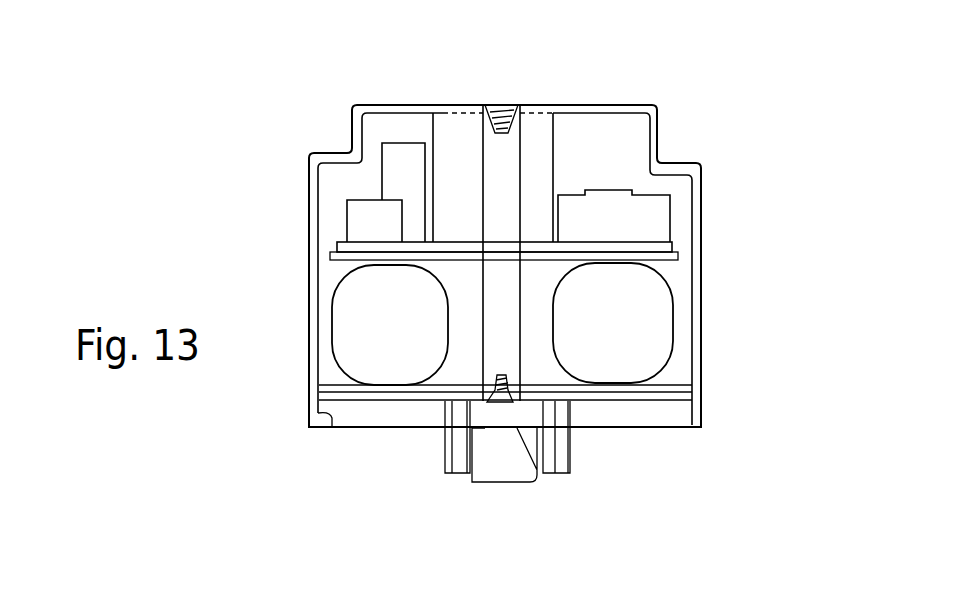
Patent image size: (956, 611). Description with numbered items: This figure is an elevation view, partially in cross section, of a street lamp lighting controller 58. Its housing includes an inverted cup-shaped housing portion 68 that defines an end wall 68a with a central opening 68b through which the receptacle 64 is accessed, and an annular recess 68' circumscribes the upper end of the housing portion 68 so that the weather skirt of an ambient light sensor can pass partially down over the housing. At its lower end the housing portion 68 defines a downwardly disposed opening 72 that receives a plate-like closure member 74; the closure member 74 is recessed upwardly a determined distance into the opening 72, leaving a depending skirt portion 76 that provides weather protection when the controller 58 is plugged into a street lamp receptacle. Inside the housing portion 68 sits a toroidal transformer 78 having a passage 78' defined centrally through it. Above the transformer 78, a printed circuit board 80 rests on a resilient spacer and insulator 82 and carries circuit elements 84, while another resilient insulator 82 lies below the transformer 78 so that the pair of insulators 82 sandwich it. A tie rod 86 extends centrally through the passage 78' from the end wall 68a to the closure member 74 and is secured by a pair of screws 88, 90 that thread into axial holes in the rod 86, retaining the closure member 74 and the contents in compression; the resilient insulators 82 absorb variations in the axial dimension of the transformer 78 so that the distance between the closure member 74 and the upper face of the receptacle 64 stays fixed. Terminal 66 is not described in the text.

The controller 58 is at (363, 75).
The receptacle 64 is at (487, 95).
The terminals 66 is at (460, 473).
The cup-shaped housing portion 68 is at (542, 266).
The annular recess 68' is at (532, 244).
The end wall 68a is at (608, 107).
The central opening 68b is at (577, 123).
The downwardly disposed opening 72 is at (333, 427).
The closure member 74 is at (380, 400).
The skirt portion 76 is at (702, 420).
The toroidal transformer 78 is at (502, 324).
The passage 78' is at (548, 309).
The printed circuit board 80 is at (332, 242).
The resilient spacer and insulator 82 is at (330, 255).
The circuit elements 84 is at (368, 222).
The tie rod 86 is at (512, 184).
The screw 88 is at (502, 105).
The screw 90 is at (562, 476).